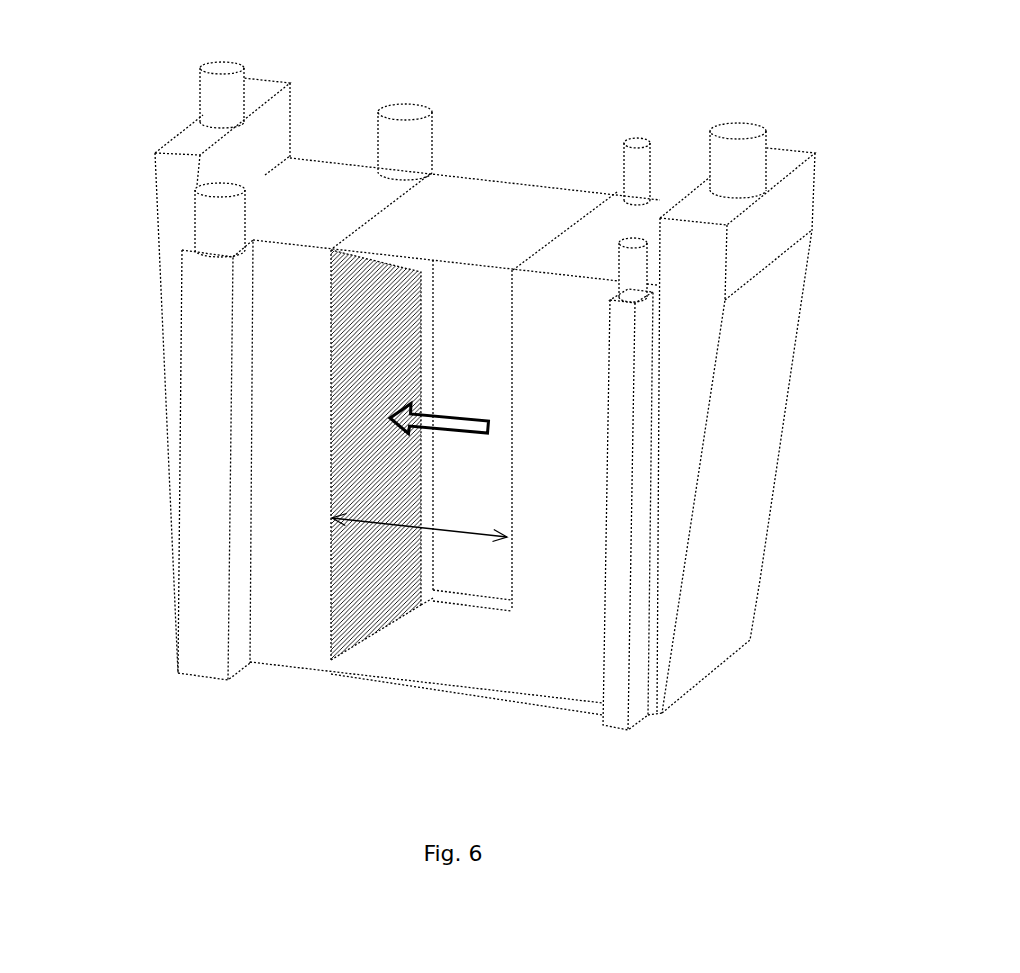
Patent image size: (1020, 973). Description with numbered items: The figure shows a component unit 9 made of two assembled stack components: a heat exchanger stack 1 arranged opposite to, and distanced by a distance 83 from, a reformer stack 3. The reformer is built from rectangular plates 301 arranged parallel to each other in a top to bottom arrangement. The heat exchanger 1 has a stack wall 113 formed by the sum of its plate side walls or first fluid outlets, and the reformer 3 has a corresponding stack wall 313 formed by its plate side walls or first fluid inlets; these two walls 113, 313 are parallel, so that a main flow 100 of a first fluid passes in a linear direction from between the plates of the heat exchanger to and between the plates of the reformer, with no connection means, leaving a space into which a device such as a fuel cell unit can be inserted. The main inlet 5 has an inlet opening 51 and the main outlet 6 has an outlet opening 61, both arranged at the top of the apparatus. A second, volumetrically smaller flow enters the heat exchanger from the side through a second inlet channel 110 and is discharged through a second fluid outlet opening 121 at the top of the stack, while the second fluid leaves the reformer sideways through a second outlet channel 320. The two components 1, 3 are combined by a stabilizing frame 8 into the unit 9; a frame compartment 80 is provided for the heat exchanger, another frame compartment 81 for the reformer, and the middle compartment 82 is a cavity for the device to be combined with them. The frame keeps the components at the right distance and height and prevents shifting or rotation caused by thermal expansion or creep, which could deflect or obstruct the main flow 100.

The heat exchanger stack 1 is at (540, 637).
The reformer stack 3 is at (278, 602).
The main inlet 5 is at (743, 338).
The main outlet 6 is at (180, 198).
The stabilizing frame 8 is at (427, 235).
The component unit 9 is at (717, 715).
The inlet opening 51 is at (740, 133).
The outlet opening 61 is at (221, 74).
The frame compartment 80 is at (570, 293).
The frame compartment 81 is at (302, 267).
The middle compartment 82 is at (468, 310).
The distance 83 is at (440, 527).
The main flow 100 is at (450, 423).
The second inlet channel 110 is at (627, 521).
The stack wall 113 is at (499, 370).
The second fluid outlet opening 121 is at (638, 150).
The rectangular plate 301 is at (357, 583).
The stack wall 313 is at (363, 378).
The second outlet channel 320 is at (205, 358).